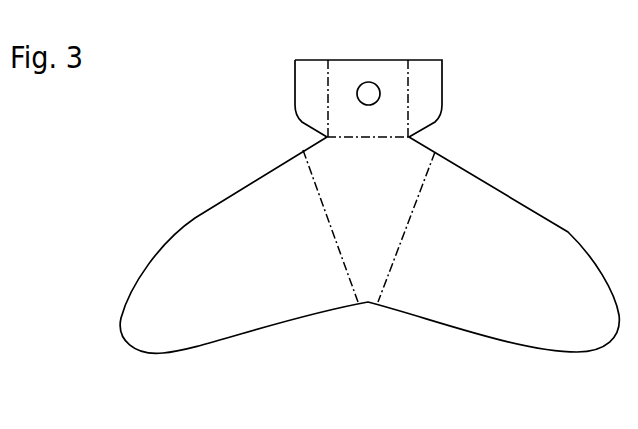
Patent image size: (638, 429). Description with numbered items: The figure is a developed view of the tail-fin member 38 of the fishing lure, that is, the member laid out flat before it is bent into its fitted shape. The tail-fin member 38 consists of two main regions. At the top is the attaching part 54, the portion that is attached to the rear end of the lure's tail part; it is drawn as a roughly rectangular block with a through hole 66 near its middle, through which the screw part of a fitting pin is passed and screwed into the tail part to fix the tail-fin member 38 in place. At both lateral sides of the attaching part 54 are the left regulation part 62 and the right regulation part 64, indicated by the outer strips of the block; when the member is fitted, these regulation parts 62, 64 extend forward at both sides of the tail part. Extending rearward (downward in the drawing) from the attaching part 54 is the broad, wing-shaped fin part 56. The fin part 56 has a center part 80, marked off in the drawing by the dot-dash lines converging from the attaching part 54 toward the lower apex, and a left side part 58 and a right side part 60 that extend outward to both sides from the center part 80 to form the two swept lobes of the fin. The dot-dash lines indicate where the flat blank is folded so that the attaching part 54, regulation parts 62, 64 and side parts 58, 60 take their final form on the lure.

The tail-fin member 38 is at (228, 168).
The attaching part 54 is at (392, 68).
The fin part 56 is at (372, 306).
The left side part 58 is at (226, 318).
The right side part 60 is at (517, 315).
The left regulation part 62 is at (295, 82).
The right regulation part 64 is at (443, 84).
The through hole 66 is at (357, 84).
The center part 80 is at (390, 185).